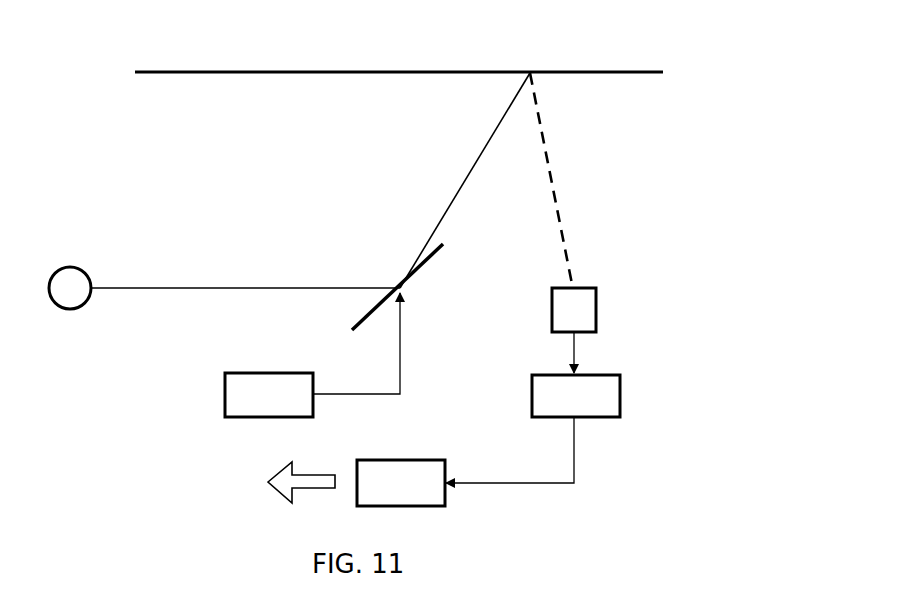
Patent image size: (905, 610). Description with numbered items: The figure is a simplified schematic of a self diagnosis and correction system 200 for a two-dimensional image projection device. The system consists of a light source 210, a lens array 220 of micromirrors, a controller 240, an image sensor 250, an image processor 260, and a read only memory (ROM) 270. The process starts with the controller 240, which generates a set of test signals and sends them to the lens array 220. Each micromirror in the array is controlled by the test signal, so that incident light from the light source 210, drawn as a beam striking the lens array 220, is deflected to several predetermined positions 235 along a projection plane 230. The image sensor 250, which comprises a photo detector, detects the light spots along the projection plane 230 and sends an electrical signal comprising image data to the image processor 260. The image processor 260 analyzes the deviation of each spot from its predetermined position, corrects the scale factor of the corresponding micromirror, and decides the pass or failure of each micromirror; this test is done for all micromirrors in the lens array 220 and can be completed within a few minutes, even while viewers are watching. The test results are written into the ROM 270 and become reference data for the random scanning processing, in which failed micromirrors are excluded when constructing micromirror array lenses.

The random scanning laser system 200 is at (661, 201).
The light source 210 is at (72, 265).
The lens array 220 is at (422, 270).
The projection plane 230 is at (157, 73).
The predetermined positions 235 is at (533, 76).
The controller 240 is at (225, 392).
The image sensor 250 is at (596, 298).
The image processor 260 is at (600, 418).
The read only memory (ROM) 270 is at (442, 460).